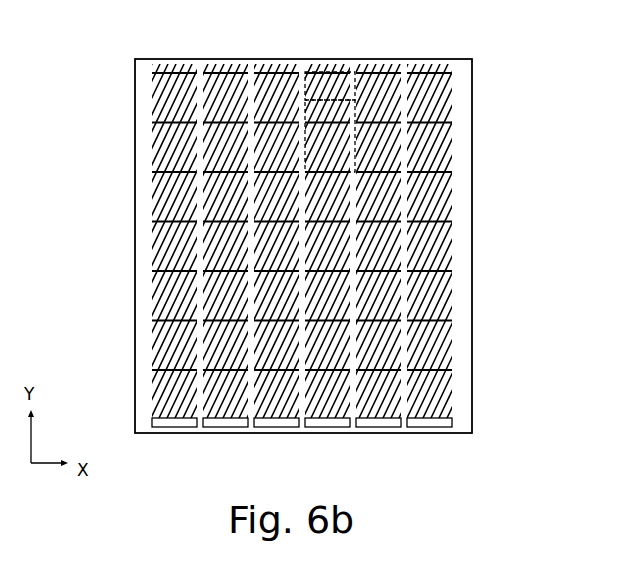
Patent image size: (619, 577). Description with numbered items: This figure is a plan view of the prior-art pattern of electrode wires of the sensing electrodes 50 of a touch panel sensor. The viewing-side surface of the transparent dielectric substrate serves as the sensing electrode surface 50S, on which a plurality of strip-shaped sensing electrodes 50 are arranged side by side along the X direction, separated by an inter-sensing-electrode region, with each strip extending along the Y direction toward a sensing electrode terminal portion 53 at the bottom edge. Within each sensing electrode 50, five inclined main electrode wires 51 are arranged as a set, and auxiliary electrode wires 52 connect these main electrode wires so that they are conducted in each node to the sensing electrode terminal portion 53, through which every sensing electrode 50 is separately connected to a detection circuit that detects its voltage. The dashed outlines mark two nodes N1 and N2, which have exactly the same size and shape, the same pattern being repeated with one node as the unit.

The sensing electrode 50 is at (309, 213).
The sensing electrode surface 50S is at (452, 58).
The main electrode wire 51 is at (157, 74).
The auxiliary electrode wire 52 is at (218, 73).
The sensing electrode terminal portion 53 is at (257, 433).
The node N1 is at (355, 100).
The node N2 is at (355, 148).